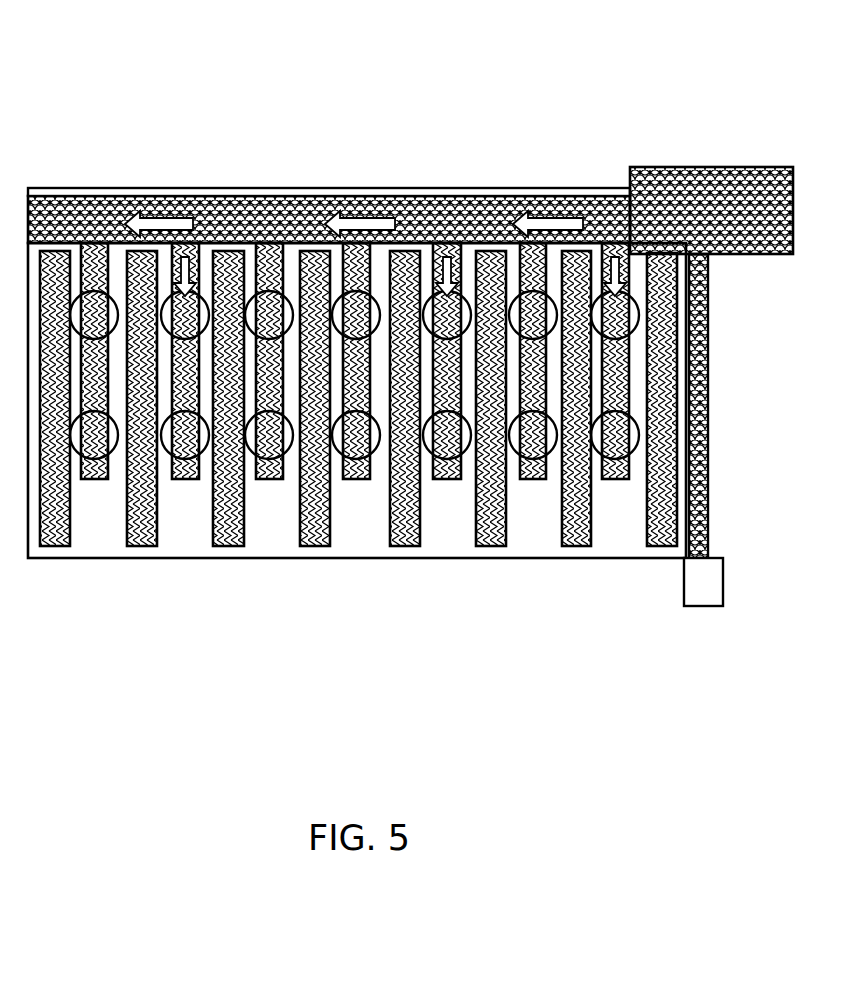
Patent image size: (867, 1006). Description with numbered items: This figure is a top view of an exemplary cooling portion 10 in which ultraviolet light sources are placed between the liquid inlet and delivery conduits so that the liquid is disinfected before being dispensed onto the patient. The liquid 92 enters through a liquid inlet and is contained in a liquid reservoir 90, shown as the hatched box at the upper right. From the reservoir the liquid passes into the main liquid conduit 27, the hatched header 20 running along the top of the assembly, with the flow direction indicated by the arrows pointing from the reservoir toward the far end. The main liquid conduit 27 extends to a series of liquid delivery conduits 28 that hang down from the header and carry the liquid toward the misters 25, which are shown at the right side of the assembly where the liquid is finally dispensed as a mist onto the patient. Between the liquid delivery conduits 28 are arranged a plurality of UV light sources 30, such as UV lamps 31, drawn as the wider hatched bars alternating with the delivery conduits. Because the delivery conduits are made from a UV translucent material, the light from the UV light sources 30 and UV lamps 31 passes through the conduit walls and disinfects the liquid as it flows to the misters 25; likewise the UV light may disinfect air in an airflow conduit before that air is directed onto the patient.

The heat exchange assembly 10 is at (334, 110).
The manifold header 20 is at (329, 157).
The liquid 92 is at (110, 207).
The main liquid conduit 27 is at (488, 200).
The liquid delivery conduits 28 is at (248, 214).
The liquid reservoir 90 is at (681, 180).
The misters 25 is at (686, 432).
The UV light sources 30 is at (318, 546).
The UV lamps 31 is at (403, 546).